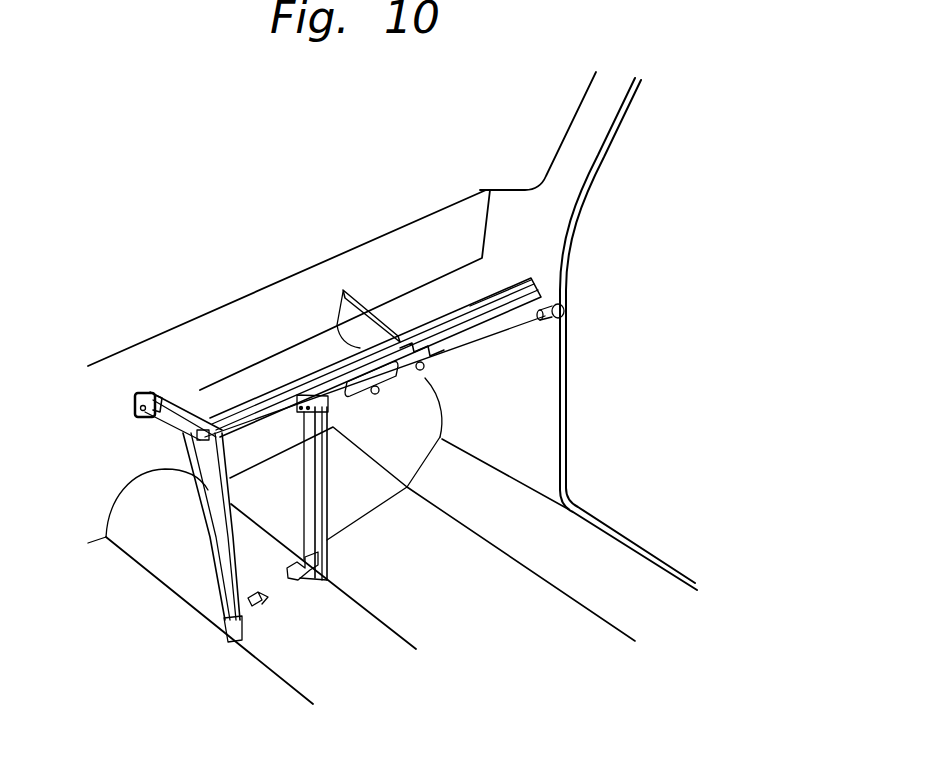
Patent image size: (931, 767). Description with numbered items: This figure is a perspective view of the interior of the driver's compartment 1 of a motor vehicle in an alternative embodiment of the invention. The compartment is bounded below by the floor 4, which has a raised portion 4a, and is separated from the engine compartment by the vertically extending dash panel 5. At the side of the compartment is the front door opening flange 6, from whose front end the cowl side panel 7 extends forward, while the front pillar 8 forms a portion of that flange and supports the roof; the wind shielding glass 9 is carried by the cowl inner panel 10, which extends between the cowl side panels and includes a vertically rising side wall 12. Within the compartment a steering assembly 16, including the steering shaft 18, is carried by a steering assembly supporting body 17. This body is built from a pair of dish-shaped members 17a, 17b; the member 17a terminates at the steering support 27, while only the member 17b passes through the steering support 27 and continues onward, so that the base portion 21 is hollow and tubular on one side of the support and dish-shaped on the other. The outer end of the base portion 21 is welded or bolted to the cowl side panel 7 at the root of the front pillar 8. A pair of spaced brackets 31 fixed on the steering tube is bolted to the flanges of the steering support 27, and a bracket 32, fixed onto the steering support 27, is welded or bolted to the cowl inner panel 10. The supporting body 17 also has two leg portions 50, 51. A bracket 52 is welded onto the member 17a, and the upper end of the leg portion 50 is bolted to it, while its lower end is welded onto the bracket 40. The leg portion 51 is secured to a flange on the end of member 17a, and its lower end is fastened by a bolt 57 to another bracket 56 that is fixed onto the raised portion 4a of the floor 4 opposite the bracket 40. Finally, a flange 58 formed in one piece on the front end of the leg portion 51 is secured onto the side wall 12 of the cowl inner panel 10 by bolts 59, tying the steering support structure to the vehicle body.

The driver's compartment 1 is at (447, 593).
The floor 4 is at (423, 623).
The raised portion of the floor 4a is at (360, 627).
The dash panel 5 is at (103, 471).
The front door opening flange 6 is at (565, 432).
The cowl side panel 7 is at (552, 380).
The front pillar 8 is at (590, 140).
The wind shielding glass 9 is at (525, 152).
The cowl inner panel 10 is at (233, 326).
The side wall 12 is at (287, 303).
The steering assembly 16 is at (495, 343).
The steering assembly supporting body 17 is at (440, 302).
The member 17a is at (490, 290).
The member 17b is at (477, 322).
The steering shaft 18 is at (564, 308).
The base portion 21 is at (473, 290).
The steering support 27 is at (403, 300).
The brackets 31 is at (376, 394).
The bracket 32 is at (345, 335).
The bracket 40 is at (315, 588).
The leg portion 50 is at (312, 502).
The leg portion 51 is at (220, 538).
The bracket 52 is at (328, 427).
The bracket 56 is at (265, 598).
The bolt 57 is at (235, 628).
The flange 58 is at (133, 407).
The bolts 59 is at (133, 412).